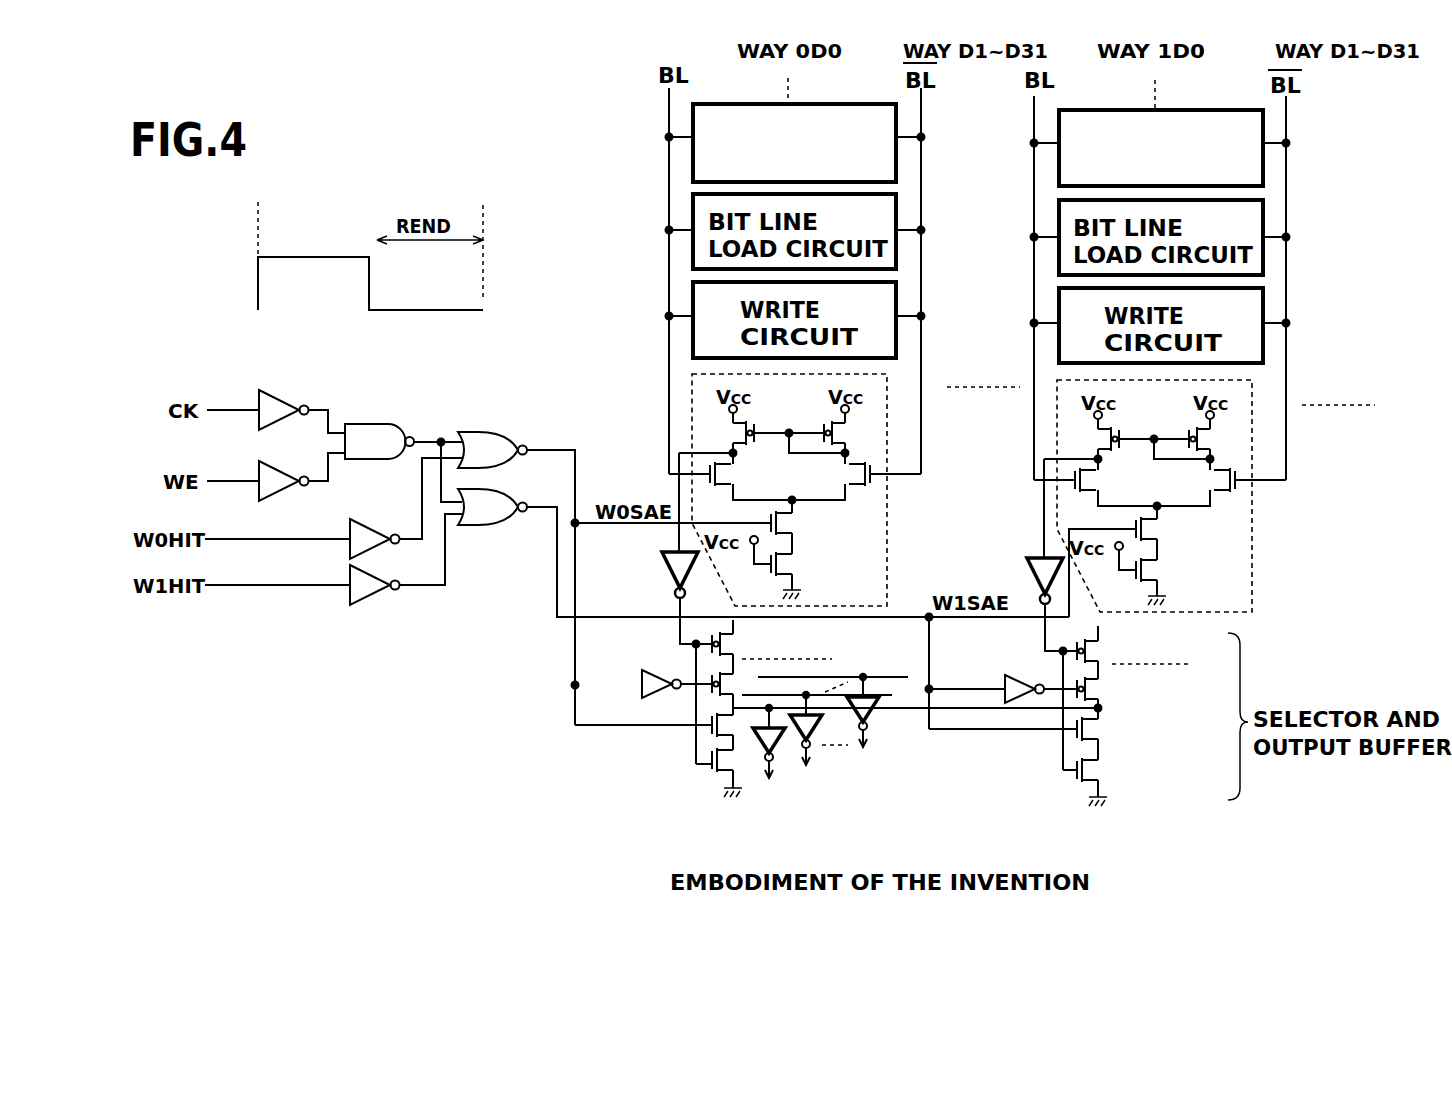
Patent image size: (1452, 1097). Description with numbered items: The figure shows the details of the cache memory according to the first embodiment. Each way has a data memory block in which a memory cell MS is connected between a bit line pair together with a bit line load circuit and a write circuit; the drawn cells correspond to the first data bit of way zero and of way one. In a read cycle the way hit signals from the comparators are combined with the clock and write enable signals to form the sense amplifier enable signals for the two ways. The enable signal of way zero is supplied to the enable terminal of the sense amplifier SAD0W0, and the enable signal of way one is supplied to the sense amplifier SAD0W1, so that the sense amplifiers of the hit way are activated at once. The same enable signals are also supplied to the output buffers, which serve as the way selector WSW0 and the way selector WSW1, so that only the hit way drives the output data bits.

The memory cell MS is at (978, 145).
The sense amplifier SAD0W0 is at (887, 500).
The sense amplifier SAD0W1 is at (1253, 560).
The way selector WSW0 is at (888, 793).
The way selector WSW1 is at (1173, 797).